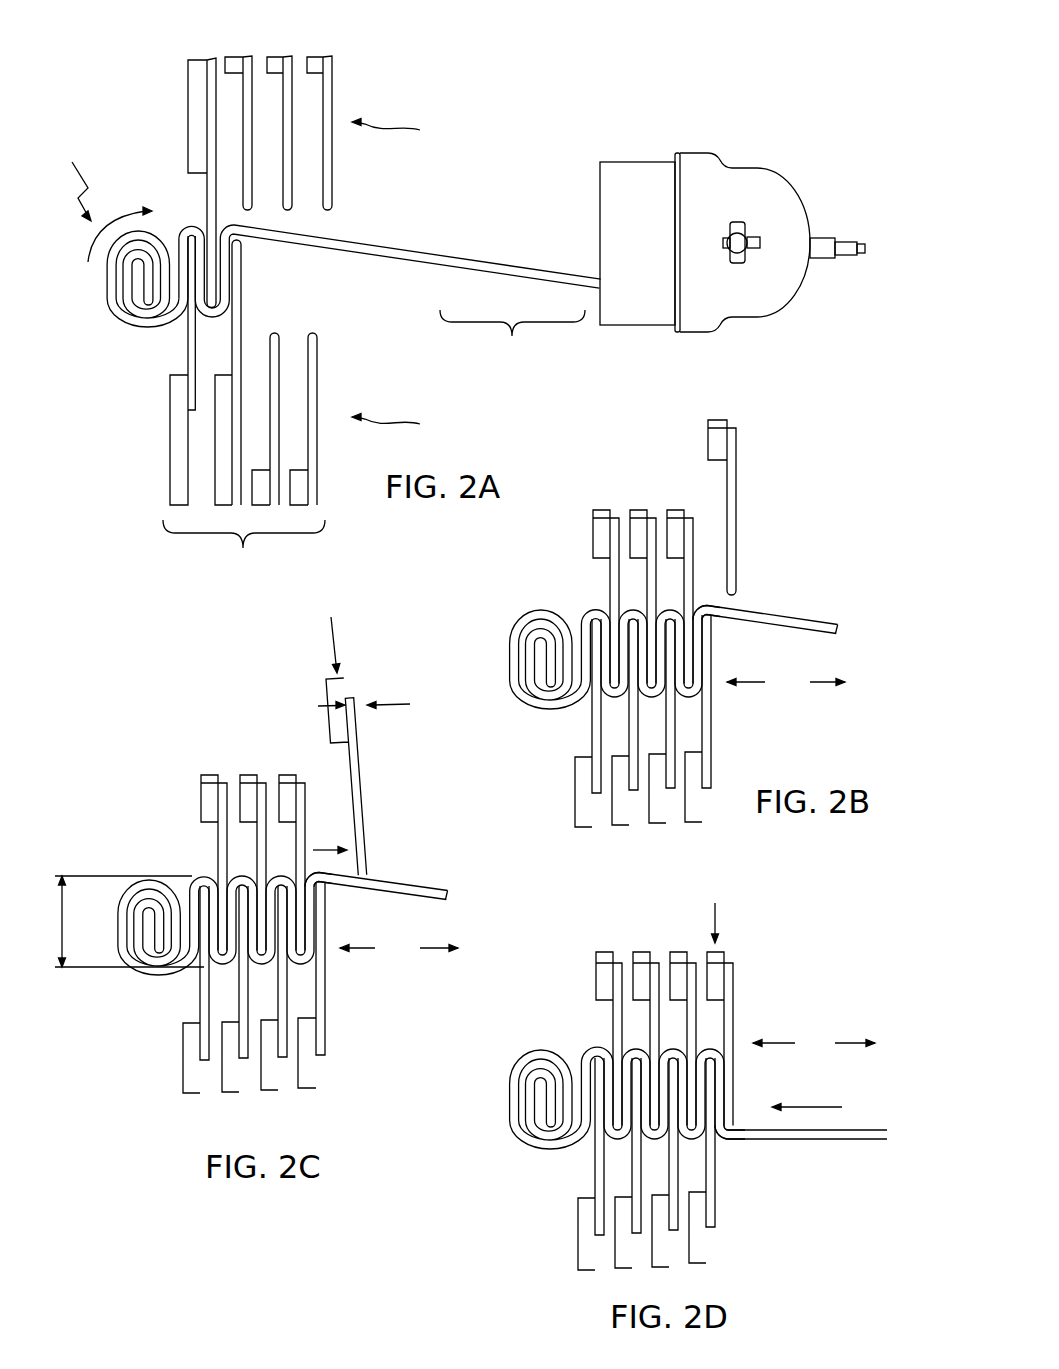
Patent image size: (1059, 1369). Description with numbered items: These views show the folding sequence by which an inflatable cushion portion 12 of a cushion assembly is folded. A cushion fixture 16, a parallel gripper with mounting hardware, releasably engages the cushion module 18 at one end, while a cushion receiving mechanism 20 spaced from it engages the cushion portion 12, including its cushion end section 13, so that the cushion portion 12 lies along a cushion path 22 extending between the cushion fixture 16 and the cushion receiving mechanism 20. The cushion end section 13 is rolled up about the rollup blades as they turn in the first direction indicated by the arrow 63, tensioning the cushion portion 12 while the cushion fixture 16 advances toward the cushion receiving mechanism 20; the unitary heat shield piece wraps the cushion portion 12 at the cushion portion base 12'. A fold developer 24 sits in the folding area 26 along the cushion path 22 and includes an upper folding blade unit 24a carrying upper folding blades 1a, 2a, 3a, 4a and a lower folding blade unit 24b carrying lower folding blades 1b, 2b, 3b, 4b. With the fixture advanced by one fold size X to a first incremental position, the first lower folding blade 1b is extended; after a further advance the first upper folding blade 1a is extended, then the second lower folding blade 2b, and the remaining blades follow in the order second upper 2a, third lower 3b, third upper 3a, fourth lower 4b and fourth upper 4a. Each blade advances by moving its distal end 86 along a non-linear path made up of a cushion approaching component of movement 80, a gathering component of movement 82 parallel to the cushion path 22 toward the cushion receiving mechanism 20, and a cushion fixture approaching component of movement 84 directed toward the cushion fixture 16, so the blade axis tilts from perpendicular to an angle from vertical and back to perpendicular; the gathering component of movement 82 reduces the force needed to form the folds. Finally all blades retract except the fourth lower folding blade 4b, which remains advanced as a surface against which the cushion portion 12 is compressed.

In FIG. 2A, the inflatable cushion portion 12 is at (390, 271).
In FIG. 2A, the cushion portion base 12' is at (512, 344).
In FIG. 2A, the cushion end section 13 is at (135, 270).
In FIG. 2A, the cushion fixture 16 is at (770, 318).
In FIG. 2A, the cushion module 18 is at (636, 160).
In FIG. 2A, the cushion receiving mechanism 20 is at (67, 176).
In FIG. 2B, the cushion path 22 is at (786, 686).
In FIG. 2C, the cushion path 22 is at (399, 951).
In FIG. 2D, the cushion path 22 is at (814, 1045).
In FIG. 2A, the fold developer 24 is at (244, 554).
In FIG. 2A, the upper folding blade unit 24a is at (413, 134).
In FIG. 2A, the lower folding blade unit 24b is at (429, 429).
In FIG. 2A, the folding area 26 is at (300, 286).
In FIG. 2A, the first direction arrow 63 is at (127, 212).
In FIG. 2C, the cushion approaching component of movement 80 is at (334, 633).
In FIG. 2D, the cushion approaching component of movement 80 is at (717, 920).
In FIG. 2D, the gathering component of movement 82 is at (826, 1106).
In FIG. 2C, the cushion fixture approaching component of movement 84 is at (320, 848).
In FIG. 2B, the distal end 86 is at (740, 605).
In FIG. 2C, the distal end 86 is at (367, 873).
In FIG. 2D, the distal end 86 is at (730, 1138).
In FIG. 2A, the first upper folding blade 1a is at (206, 195).
In FIG. 2A, the second upper folding blade 2a is at (247, 57).
In FIG. 2A, the third upper folding blade 3a is at (287, 57).
In FIG. 2A, the fourth upper folding blade 4a is at (333, 64).
In FIG. 2B, the fourth upper folding blade 4a is at (737, 500).
In FIG. 2C, the fourth upper folding blade 4a is at (345, 752).
In FIG. 2D, the fourth upper folding blade 4a is at (735, 988).
In FIG. 2A, the first lower folding blade 1b is at (187, 349).
In FIG. 2A, the second lower folding blade 2b is at (243, 340).
In FIG. 2A, the third lower folding blade 3b is at (280, 352).
In FIG. 2A, the fourth lower folding blade 4b is at (318, 366).
In FIG. 2C, the fold size X is at (127, 921).